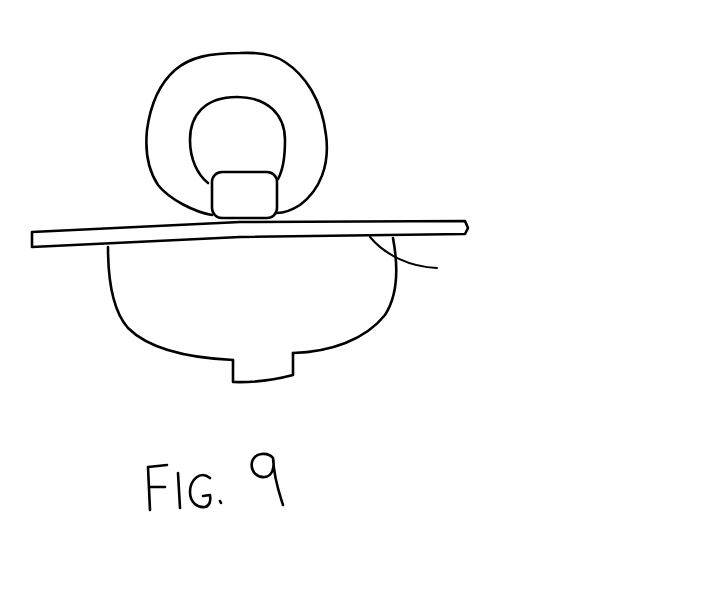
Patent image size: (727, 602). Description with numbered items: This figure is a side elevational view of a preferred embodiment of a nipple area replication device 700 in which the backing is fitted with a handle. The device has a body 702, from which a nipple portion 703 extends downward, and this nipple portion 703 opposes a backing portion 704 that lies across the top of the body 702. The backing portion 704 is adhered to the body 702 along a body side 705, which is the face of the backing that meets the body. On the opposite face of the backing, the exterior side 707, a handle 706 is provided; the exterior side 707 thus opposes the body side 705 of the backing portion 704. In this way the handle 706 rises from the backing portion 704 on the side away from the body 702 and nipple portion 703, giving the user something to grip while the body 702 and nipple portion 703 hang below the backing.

The nipple area replication device 700 is at (457, 88).
The body 702 is at (438, 333).
The nipple portion 703 is at (352, 400).
The backing portion 704 is at (507, 215).
The body side 705 is at (444, 259).
The handle 706 is at (362, 42).
The exterior side 707 is at (403, 195).